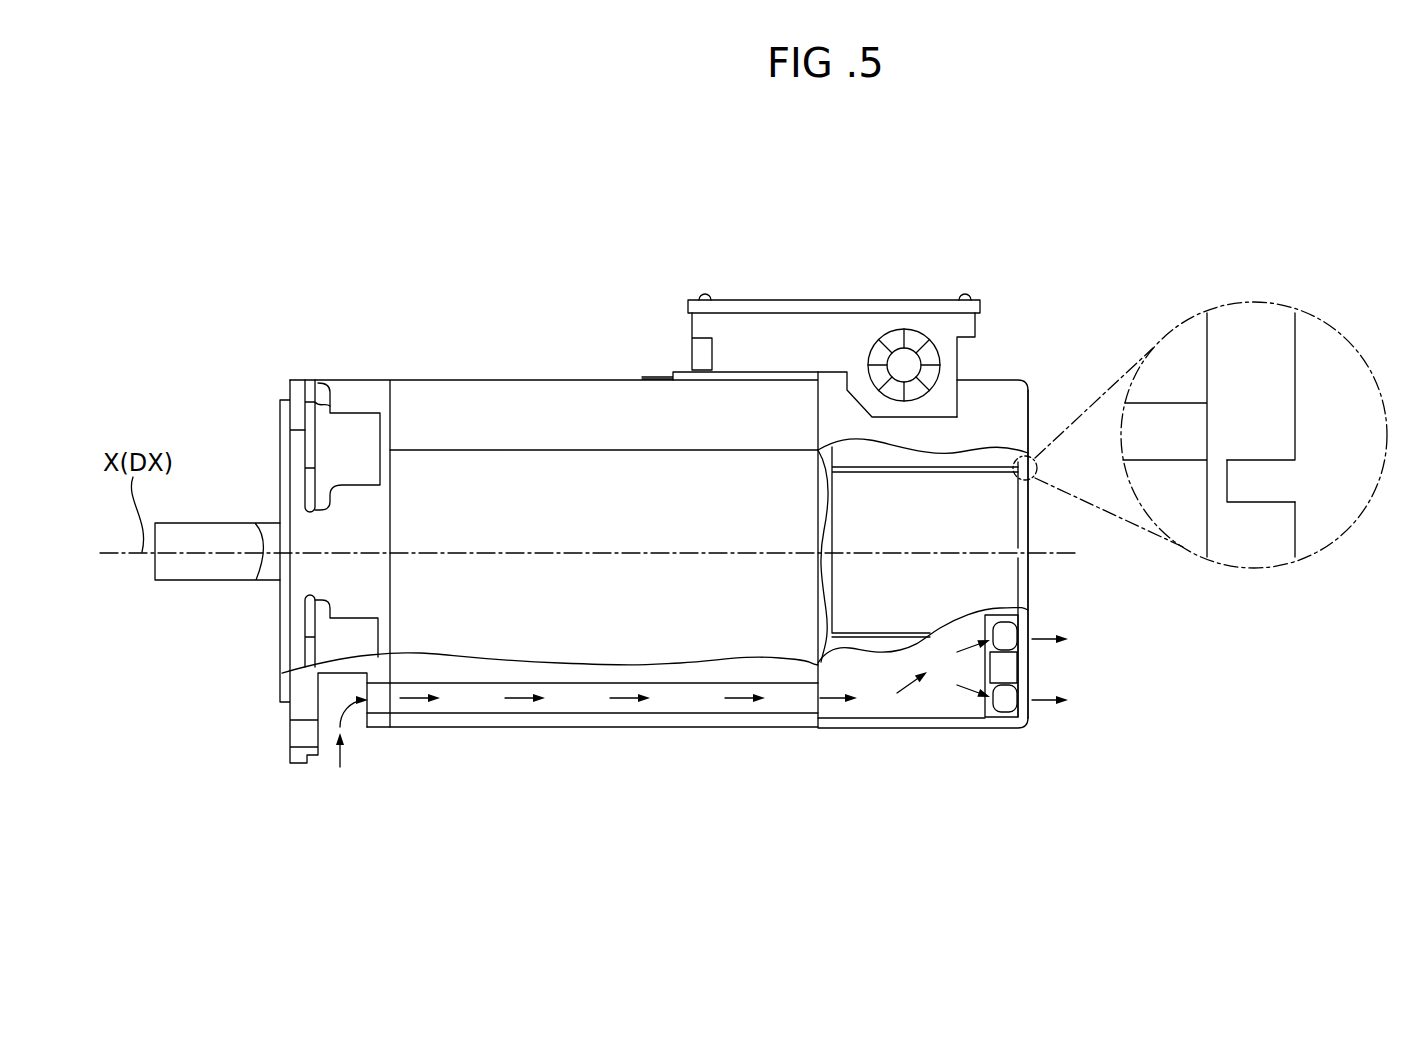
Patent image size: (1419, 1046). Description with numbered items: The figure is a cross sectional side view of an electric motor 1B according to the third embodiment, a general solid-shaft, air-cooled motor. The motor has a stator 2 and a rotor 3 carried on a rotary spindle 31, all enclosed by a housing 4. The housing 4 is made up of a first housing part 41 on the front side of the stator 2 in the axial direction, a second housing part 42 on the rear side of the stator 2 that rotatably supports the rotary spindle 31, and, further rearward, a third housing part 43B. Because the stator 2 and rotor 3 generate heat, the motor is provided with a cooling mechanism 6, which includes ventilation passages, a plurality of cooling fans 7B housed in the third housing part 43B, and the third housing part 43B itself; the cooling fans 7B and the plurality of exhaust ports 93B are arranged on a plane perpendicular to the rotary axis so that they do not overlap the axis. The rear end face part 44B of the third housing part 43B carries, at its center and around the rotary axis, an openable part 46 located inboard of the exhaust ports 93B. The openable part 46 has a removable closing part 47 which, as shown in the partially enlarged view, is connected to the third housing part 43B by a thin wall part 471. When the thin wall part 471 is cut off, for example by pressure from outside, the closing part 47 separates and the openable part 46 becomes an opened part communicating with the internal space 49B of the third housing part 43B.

The electric motor 1B is at (783, 182).
The stator 2 is at (562, 395).
The rotor 3 is at (472, 483).
The housing 4 is at (292, 365).
The first housing part 41 is at (330, 382).
The second housing part 42 is at (676, 379).
The third housing part 43B is at (981, 380).
The end face part 44B is at (1028, 414).
The openable part 46 is at (1049, 578).
The closing part 47 is at (1030, 520).
The thin wall part 471 is at (1227, 481).
The internal space 49B is at (1005, 587).
The rotary spindle 31 is at (232, 523).
The cooling mechanism 6 is at (932, 762).
The cooling fan 7B is at (1000, 722).
The exhaust port 93B is at (1030, 722).